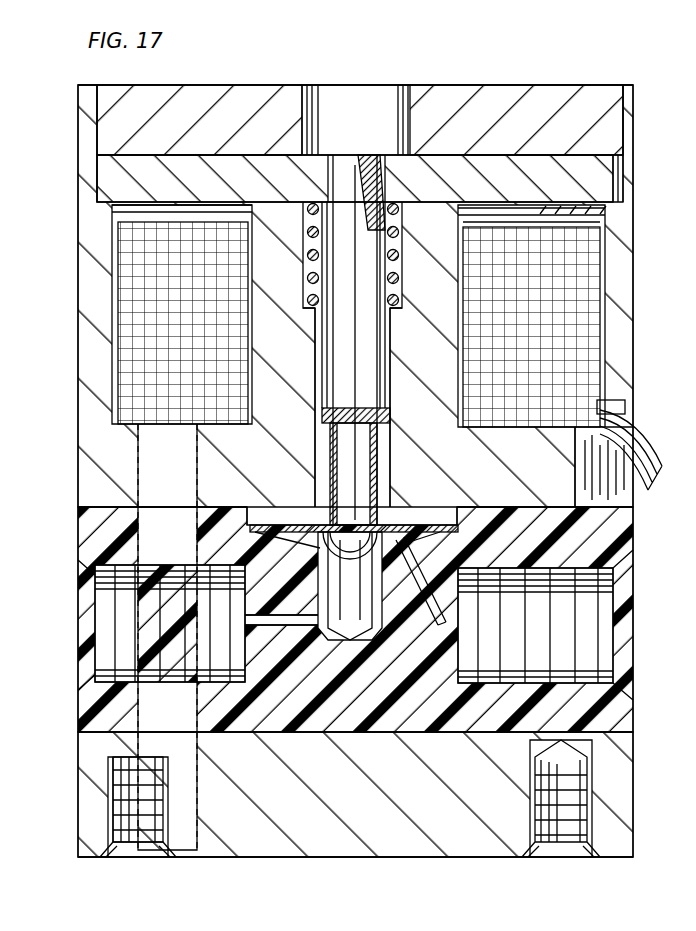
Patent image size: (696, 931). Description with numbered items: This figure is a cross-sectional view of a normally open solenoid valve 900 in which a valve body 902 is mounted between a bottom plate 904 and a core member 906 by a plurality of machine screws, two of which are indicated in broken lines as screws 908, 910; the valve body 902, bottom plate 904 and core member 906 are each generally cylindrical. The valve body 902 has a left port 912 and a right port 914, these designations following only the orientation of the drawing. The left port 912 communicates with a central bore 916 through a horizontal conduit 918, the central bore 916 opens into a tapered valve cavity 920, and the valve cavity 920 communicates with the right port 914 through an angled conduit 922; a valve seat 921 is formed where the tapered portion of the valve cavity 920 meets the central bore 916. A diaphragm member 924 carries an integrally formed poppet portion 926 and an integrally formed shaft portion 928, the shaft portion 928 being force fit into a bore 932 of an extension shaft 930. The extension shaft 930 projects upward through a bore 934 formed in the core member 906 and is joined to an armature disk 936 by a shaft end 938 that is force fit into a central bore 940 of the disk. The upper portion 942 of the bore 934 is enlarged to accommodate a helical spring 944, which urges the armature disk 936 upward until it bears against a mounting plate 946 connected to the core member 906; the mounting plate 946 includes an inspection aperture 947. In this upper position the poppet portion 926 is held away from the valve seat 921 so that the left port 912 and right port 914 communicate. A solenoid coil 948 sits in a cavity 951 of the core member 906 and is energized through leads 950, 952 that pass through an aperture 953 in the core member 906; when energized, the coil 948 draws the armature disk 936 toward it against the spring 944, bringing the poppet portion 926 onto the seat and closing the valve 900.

The normally open solenoid valve 900 is at (636, 718).
The valve body 902 is at (632, 540).
The bottom plate 904 is at (633, 810).
The core member 906 is at (633, 356).
The machine screw 908 is at (205, 858).
The machine screw 910 is at (488, 858).
The left port 912 is at (92, 568).
The right port 914 is at (633, 681).
The central bore 916 is at (346, 640).
The horizontal conduit 918 is at (291, 625).
The valve cavity 920 is at (318, 538).
The valve seat 921 is at (312, 552).
The angled conduit 922 is at (430, 628).
The diaphragm member 924 is at (340, 486).
The poppet portion 926 is at (355, 532).
The shaft portion 928 is at (326, 460).
The extension shaft 930 is at (330, 345).
The bore 932 is at (312, 440).
The bore 934 is at (392, 382).
The armature disk 936 is at (598, 180).
The shaft end 938 is at (396, 182).
The central bore 940 is at (418, 178).
The upper portion 942 is at (432, 302).
The helical spring 944 is at (438, 254).
The mounting plate 946 is at (584, 96).
The inspection aperture 947 is at (343, 150).
The solenoid coil 948 is at (612, 330).
The lead 950 is at (646, 466).
The cavity 951 is at (600, 273).
The lead 952 is at (633, 522).
The aperture 953 is at (620, 410).